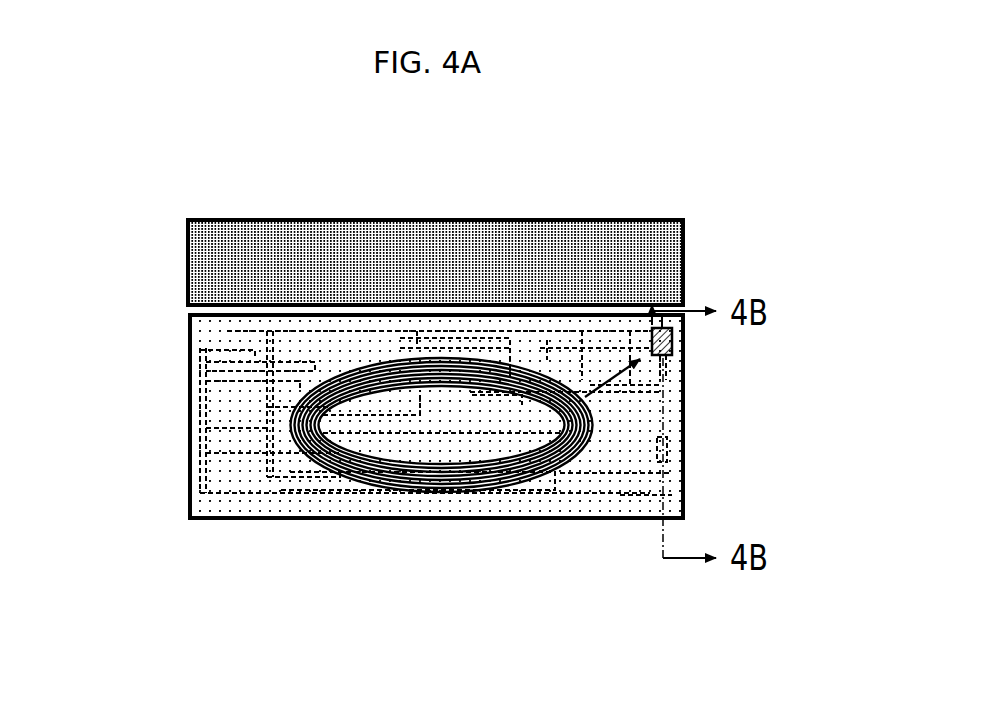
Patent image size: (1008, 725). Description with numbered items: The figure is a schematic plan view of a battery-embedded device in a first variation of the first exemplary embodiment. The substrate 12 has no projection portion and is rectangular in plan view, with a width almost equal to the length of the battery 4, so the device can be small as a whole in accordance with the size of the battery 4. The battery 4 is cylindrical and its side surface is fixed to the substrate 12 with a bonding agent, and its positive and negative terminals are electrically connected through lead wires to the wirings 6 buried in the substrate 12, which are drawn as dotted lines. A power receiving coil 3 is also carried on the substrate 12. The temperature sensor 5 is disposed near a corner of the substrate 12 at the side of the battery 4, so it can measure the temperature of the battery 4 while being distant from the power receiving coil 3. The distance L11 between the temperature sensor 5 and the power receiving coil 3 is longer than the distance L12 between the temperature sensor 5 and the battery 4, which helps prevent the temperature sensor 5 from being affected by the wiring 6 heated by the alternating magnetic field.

The battery 4 is at (449, 243).
The substrate 12 is at (232, 520).
The wirings 6 is at (634, 440).
The power receiving coil 3 is at (442, 498).
The temperature sensor 5 is at (684, 353).
The distance between temperature sensor and battery L12 is at (674, 324).
The distance between temperature sensor and power receiving coil L11 is at (615, 382).